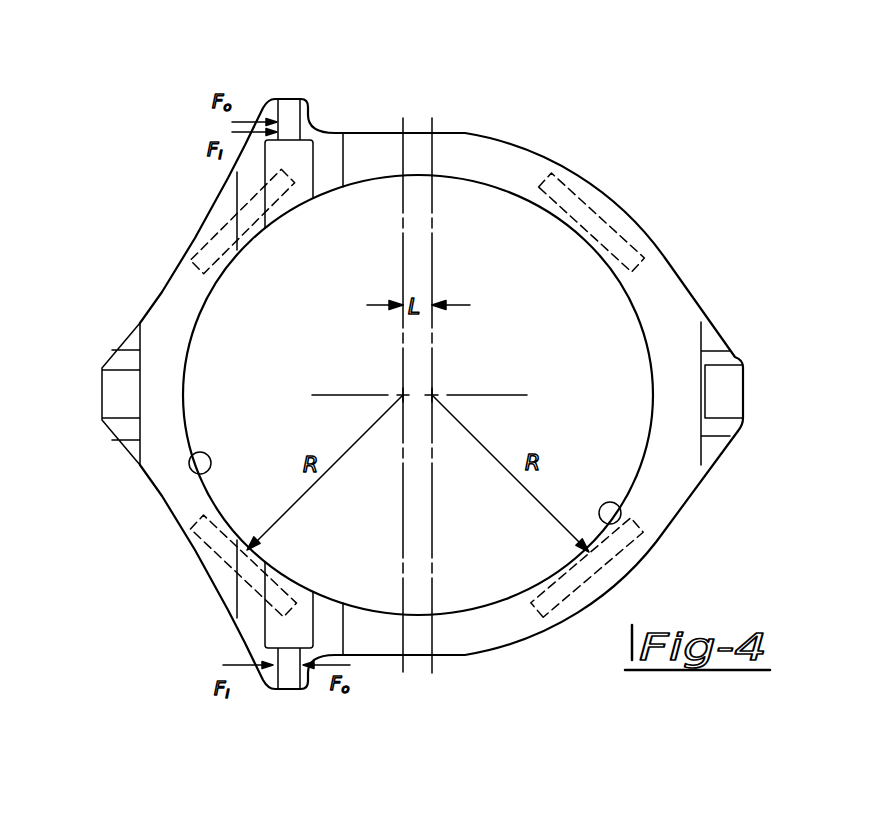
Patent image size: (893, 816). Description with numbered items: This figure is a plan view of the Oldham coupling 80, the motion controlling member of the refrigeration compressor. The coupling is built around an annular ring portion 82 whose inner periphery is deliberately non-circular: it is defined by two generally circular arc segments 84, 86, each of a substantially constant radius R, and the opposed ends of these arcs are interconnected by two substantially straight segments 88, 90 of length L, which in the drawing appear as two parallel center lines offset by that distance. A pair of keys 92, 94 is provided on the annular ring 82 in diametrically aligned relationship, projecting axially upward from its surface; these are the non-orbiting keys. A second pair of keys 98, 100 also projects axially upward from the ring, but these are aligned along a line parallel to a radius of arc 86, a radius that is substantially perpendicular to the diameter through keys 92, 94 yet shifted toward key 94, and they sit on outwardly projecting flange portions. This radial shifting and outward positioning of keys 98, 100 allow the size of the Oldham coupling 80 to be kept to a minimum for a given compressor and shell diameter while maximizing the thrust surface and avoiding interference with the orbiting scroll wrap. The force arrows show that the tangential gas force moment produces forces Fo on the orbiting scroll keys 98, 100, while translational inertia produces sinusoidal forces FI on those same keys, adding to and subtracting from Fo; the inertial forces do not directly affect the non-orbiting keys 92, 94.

The Oldham coupling 80 is at (660, 192).
The annular ring portion 82 is at (467, 160).
The circular arc segment 84 is at (613, 527).
The circular arc segment 86 is at (203, 471).
The straight segment 88 is at (420, 157).
The straight segment 90 is at (423, 650).
The key 92 is at (727, 398).
The key 94 is at (125, 397).
The key 98 is at (283, 690).
The key 100 is at (295, 118).